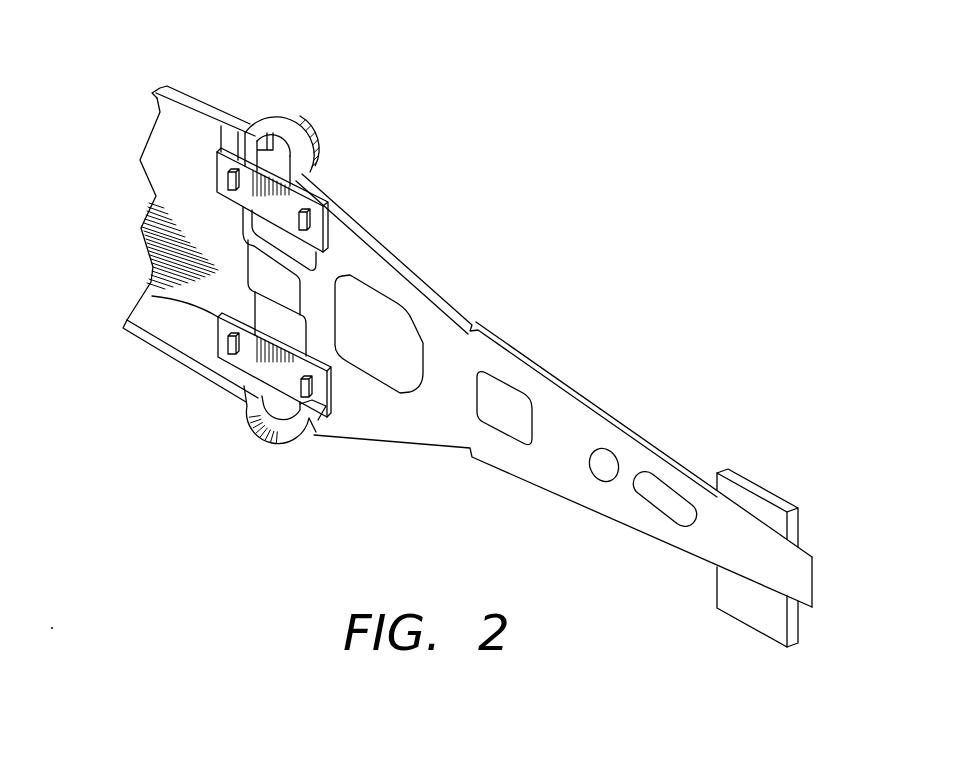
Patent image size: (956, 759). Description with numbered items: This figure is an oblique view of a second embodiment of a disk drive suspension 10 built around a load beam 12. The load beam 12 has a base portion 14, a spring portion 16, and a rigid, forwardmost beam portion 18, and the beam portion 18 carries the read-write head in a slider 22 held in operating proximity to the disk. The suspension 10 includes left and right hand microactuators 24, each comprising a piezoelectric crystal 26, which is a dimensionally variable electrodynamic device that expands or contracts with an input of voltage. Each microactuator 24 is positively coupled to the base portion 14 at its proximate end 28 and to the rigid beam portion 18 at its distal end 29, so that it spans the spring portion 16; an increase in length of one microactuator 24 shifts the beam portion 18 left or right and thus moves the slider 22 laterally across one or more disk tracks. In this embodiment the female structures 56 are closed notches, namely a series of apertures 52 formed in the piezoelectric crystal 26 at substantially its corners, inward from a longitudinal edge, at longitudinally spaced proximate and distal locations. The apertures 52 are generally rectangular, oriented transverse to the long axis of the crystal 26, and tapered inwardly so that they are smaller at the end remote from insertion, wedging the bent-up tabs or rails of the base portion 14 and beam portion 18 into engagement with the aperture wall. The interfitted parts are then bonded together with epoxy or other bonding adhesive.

The disk drive suspension 10 is at (100, 168).
The load beam 12 is at (447, 290).
The base portion 14 is at (180, 338).
The spring portion 16 is at (253, 445).
The beam portion 18 is at (541, 488).
The slider 22 is at (764, 492).
The microactuator 24 is at (274, 208).
The piezoelectric crystal 26 is at (245, 132).
The proximate end 28 is at (220, 117).
The distal end 29 is at (332, 198).
The aperture 52 is at (152, 296).
The female structure 56 is at (325, 419).